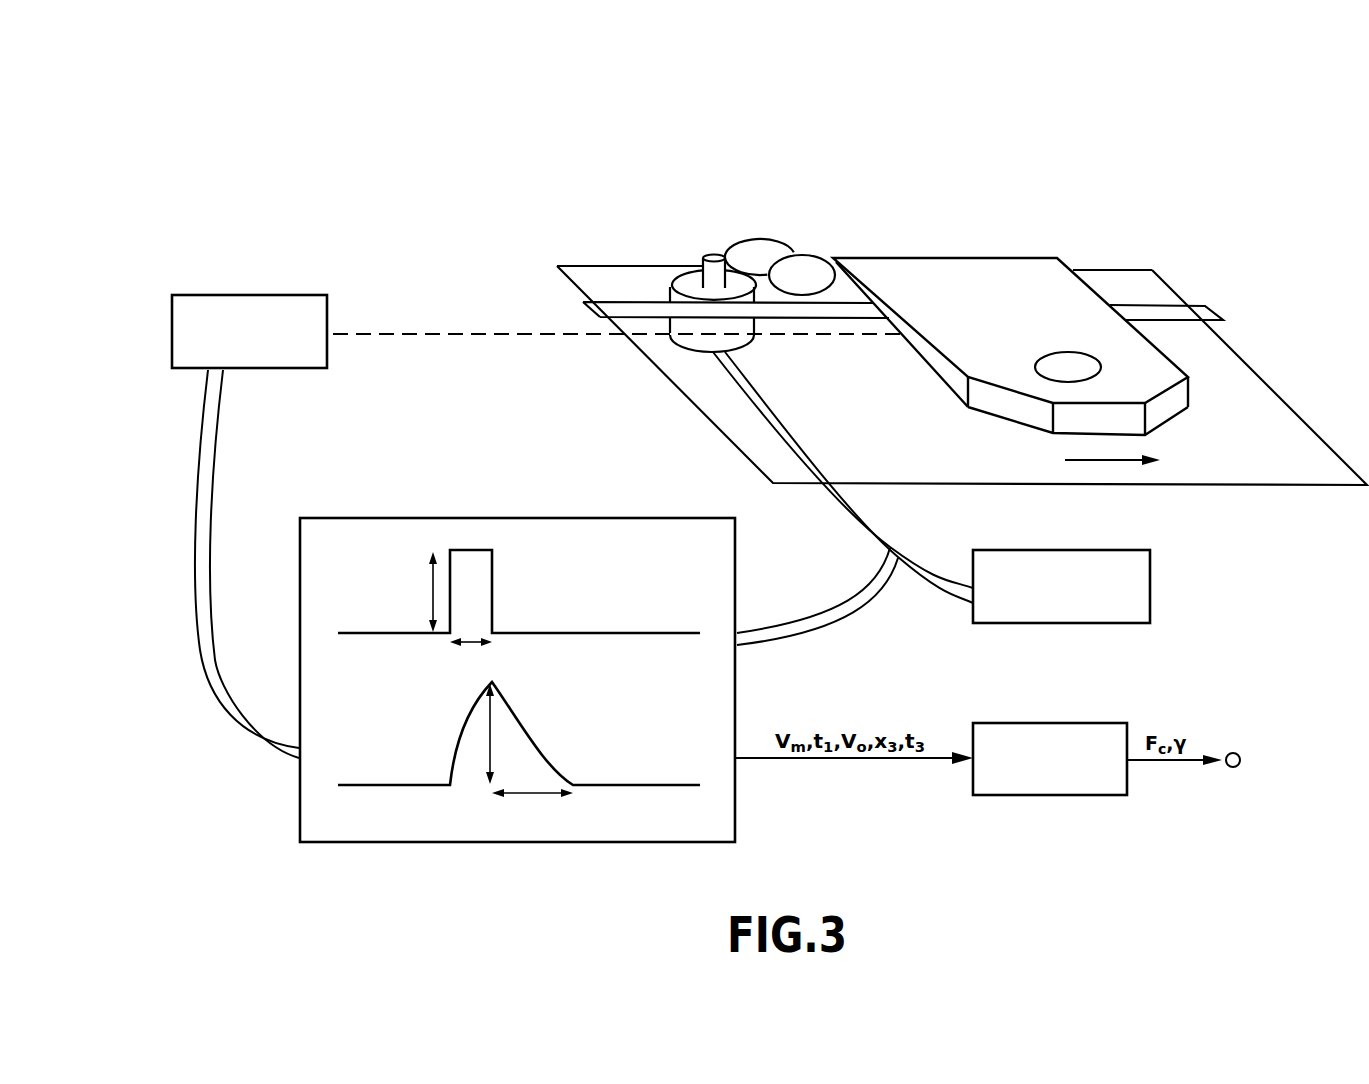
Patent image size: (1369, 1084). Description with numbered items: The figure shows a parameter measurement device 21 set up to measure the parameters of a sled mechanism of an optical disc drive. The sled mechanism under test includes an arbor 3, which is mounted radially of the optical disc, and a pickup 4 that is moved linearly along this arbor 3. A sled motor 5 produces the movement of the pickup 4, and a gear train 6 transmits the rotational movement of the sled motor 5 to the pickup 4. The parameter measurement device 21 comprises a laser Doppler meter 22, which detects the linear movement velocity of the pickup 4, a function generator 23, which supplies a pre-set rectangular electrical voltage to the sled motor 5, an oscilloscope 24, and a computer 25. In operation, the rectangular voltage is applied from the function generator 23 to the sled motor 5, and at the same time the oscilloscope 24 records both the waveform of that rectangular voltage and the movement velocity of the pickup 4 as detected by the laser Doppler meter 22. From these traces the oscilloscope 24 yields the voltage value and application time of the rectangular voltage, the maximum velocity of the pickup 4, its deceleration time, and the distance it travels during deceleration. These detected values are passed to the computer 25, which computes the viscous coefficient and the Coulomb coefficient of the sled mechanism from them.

The arbor 3 is at (1195, 303).
The pickup 4 is at (985, 258).
The sled motor 5 is at (683, 267).
The gear train 6 is at (817, 253).
The parameter measurement device 21 is at (508, 186).
The laser Doppler meter 22 is at (263, 295).
The function generator 23 is at (1152, 587).
The oscilloscope 24 is at (568, 518).
The computer 25 is at (1080, 723).